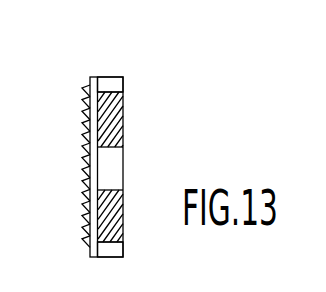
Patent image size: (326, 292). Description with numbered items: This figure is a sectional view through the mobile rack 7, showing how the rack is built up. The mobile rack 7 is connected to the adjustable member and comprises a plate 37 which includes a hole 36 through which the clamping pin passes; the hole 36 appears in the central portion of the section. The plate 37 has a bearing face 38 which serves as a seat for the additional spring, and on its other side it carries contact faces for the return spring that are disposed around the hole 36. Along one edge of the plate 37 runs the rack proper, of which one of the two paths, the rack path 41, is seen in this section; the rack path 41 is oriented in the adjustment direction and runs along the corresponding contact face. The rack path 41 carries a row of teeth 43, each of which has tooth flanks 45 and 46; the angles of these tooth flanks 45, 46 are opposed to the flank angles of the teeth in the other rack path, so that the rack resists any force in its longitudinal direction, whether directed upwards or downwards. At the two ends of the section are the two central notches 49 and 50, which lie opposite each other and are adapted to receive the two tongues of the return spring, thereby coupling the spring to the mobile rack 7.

The mobile rack 7 is at (135, 80).
The central notch 49 is at (109, 82).
The plate 37 is at (118, 110).
The bearing face 38 is at (118, 137).
The hole 36 is at (110, 172).
The tooth flank 45 is at (82, 200).
The tooth flank 46 is at (82, 210).
The rack path 41 is at (79, 118).
The teeth 43 is at (78, 147).
The central notch 50 is at (110, 250).